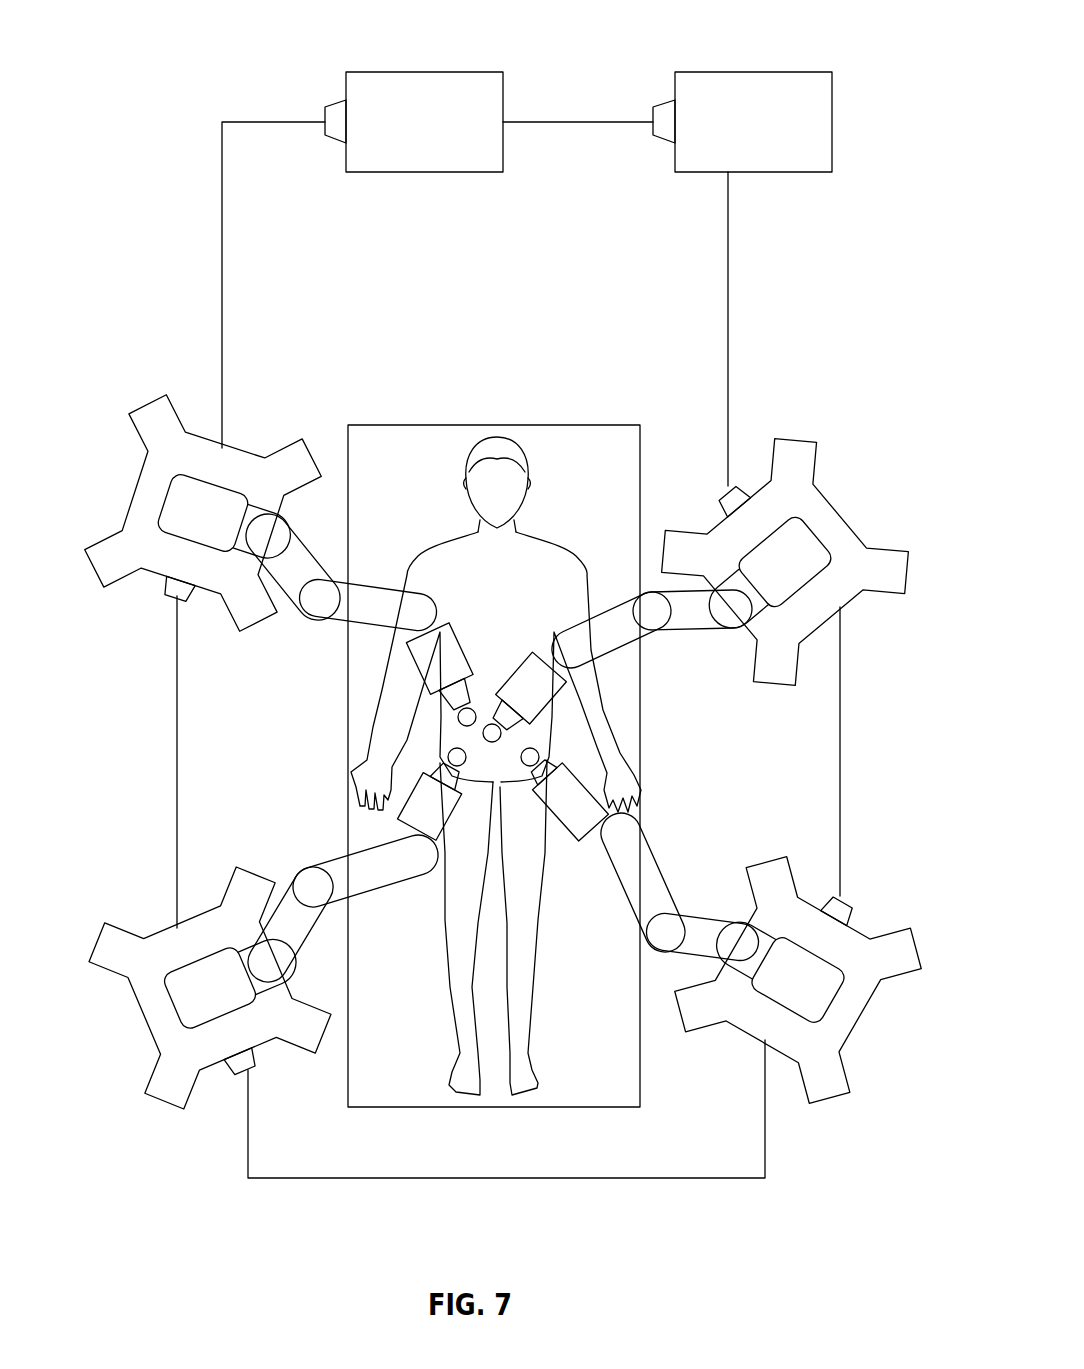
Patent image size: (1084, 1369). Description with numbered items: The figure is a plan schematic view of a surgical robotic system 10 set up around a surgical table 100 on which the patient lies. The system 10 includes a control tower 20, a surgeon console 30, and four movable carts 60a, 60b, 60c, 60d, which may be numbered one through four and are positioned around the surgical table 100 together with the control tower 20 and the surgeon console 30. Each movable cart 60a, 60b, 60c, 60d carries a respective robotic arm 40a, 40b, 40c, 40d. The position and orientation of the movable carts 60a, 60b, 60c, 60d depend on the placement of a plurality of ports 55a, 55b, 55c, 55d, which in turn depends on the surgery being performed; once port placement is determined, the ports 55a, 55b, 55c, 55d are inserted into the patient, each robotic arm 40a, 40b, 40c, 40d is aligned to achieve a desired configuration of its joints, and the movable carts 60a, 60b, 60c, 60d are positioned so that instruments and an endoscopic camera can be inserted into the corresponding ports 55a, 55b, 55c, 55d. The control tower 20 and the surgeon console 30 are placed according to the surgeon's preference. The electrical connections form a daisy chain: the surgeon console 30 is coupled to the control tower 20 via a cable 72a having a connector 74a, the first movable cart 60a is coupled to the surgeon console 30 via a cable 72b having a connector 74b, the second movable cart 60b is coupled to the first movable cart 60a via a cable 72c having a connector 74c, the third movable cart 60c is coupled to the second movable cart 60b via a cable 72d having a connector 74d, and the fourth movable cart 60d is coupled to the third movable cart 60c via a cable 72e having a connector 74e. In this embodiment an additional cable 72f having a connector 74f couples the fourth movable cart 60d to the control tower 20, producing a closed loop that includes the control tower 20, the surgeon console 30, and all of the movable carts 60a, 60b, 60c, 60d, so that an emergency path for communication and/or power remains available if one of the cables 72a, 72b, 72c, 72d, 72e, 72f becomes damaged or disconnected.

The surgical robotic system 10 is at (842, 361).
The control tower 20 is at (752, 72).
The surgeon console 30 is at (425, 72).
The robotic arm 40a is at (330, 602).
The robotic arm 40b is at (318, 888).
The robotic arm 40c is at (603, 622).
The robotic arm 40d is at (636, 882).
The port 55a is at (470, 708).
The port 55b is at (448, 757).
The port 55c is at (496, 724).
The port 55d is at (531, 767).
The first movable cart 60a is at (124, 490).
The second movable cart 60b is at (142, 1028).
The third movable cart 60c is at (830, 1102).
The fourth movable cart 60d is at (848, 515).
The cable 72a is at (580, 121).
The cable 72b is at (222, 268).
The cable 72c is at (177, 748).
The cable 72d is at (363, 1180).
The cable 72e is at (840, 752).
The cable 72f is at (728, 346).
The connector 74a is at (660, 102).
The connector 74b is at (340, 102).
The connector 74c is at (163, 588).
The connector 74d is at (232, 1075).
The connector 74e is at (852, 912).
The connector 74f is at (720, 492).
The surgical table 100 is at (565, 425).